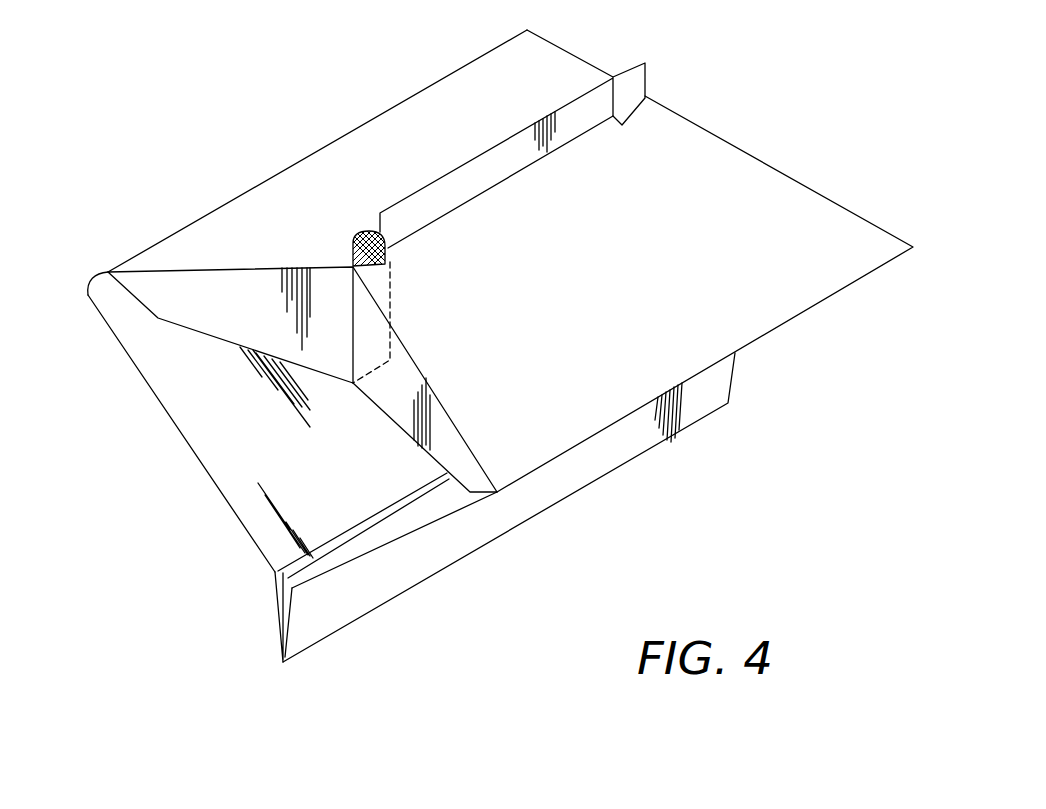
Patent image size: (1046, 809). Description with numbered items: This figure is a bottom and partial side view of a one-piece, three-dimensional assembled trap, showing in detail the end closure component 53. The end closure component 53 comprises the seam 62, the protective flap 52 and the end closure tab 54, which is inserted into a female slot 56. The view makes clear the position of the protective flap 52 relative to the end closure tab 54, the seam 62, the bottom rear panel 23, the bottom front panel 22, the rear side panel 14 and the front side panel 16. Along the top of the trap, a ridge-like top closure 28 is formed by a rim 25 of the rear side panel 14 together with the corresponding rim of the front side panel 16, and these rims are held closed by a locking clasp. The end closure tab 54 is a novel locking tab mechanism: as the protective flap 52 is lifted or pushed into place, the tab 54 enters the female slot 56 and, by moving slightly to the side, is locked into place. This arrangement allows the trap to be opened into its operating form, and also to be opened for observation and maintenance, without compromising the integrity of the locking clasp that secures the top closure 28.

The rear side panel 14 is at (190, 453).
The front side panel 16 is at (447, 500).
The bottom front panel 22 is at (788, 305).
The bottom rear panel 23 is at (391, 130).
The rim 25 is at (410, 568).
The top closure 28 is at (277, 606).
The protective flap 52 is at (257, 310).
The end closure component 53 is at (86, 270).
The end closure tab 54 is at (352, 244).
The female slot 56 is at (403, 248).
The seam 62 is at (592, 100).